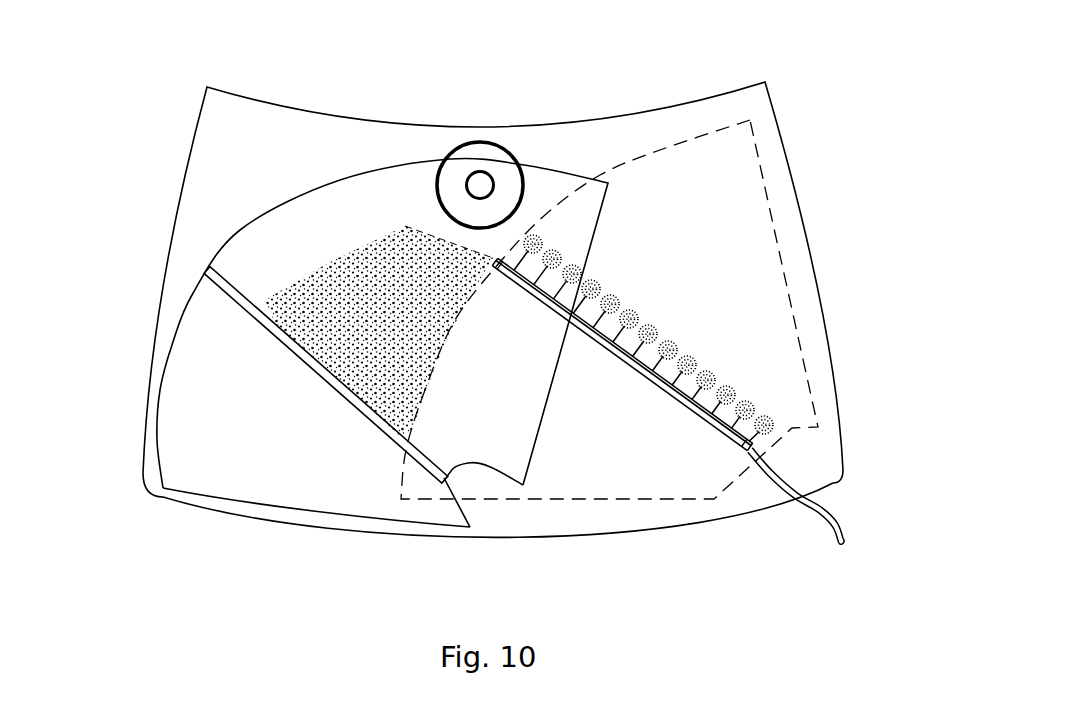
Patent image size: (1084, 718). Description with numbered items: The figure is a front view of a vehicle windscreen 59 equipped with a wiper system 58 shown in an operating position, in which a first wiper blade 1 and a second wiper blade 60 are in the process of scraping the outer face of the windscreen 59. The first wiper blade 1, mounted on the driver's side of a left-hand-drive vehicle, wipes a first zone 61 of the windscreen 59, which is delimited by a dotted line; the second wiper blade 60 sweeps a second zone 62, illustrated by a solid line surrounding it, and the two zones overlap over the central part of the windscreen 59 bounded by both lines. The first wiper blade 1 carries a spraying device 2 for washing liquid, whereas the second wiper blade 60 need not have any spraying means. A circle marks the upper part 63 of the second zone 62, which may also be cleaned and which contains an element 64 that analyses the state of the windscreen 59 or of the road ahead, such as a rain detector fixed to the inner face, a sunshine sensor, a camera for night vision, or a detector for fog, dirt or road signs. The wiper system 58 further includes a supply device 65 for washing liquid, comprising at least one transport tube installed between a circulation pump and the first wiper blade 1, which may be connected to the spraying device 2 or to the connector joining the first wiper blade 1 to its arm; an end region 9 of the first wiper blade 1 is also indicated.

The first wiper blade 1 is at (623, 357).
The spraying device 2 is at (753, 447).
The end piece 9 is at (498, 262).
The wiper system 58 is at (665, 412).
The windscreen 59 is at (240, 137).
The second wiper blade 60 is at (316, 370).
The first zone 61 is at (765, 180).
The second zone 62 is at (190, 294).
The upper part of the second zone 63 is at (452, 146).
The analysing element 64 is at (489, 173).
The washing liquid supply device 65 is at (840, 522).